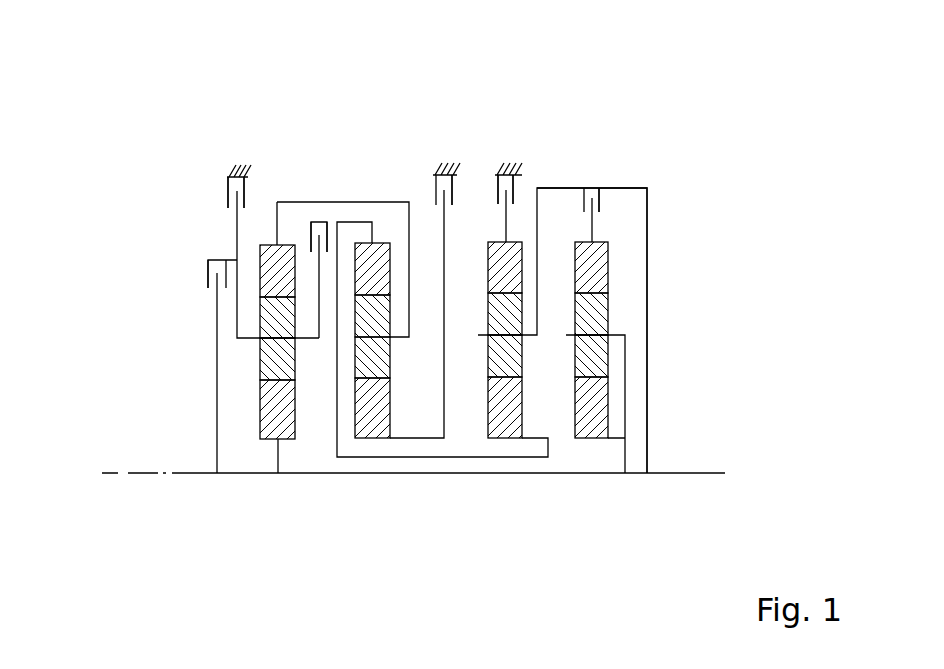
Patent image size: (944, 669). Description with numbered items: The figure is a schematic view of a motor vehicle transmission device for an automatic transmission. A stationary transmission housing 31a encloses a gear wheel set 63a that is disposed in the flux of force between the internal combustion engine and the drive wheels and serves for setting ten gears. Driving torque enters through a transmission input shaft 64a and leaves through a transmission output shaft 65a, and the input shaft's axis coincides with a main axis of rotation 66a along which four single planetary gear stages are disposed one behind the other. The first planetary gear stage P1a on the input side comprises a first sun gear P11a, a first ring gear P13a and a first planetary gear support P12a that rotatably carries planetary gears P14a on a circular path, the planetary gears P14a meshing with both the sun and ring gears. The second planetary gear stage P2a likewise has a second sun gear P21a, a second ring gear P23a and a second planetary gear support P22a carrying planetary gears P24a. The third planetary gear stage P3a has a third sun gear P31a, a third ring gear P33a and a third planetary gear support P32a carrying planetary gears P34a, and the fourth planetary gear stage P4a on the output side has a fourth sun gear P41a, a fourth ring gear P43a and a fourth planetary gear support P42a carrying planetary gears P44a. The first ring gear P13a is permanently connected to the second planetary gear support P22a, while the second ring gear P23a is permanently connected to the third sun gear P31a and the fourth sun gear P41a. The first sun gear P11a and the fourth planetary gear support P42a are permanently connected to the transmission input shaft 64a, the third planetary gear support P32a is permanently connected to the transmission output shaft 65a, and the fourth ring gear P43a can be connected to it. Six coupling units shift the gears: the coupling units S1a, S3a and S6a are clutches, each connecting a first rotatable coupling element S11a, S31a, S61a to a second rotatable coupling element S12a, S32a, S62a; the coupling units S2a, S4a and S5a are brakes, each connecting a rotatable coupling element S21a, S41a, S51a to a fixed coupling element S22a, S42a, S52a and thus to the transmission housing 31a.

The transmission housing 31a is at (230, 170).
The gear wheel set 63a is at (697, 160).
The transmission input shaft 64a is at (228, 478).
The transmission output shaft 65a is at (688, 478).
The main axis of rotation 66a is at (131, 478).
The first coupling unit S1a is at (217, 255).
The first rotatable coupling element of the first coupling unit S11a is at (215, 308).
The second rotatable coupling element of the first coupling unit S12a is at (209, 259).
The second coupling unit S2a is at (230, 165).
The rotatable coupling element of the second coupling unit S21a is at (230, 223).
The fixed coupling element of the second coupling unit S22a is at (230, 196).
The third coupling unit S3a is at (318, 218).
The first rotatable coupling element of the third coupling unit S31a is at (294, 248).
The second rotatable coupling element of the third coupling unit S32a is at (328, 245).
The fourth coupling unit S4a is at (452, 154).
The rotatable coupling element of the fourth coupling unit S41a is at (441, 228).
The fixed coupling element of the fourth coupling unit S42a is at (455, 193).
The fifth coupling unit S5a is at (515, 157).
The rotatable coupling element of the fifth coupling unit S51a is at (490, 210).
The fixed coupling element of the fifth coupling unit S52a is at (514, 194).
The sixth coupling unit S6a is at (609, 178).
The first rotatable coupling element of the sixth coupling unit S61a is at (593, 232).
The second rotatable coupling element of the sixth coupling unit S62a is at (600, 208).
The first planetary gear stage P1a is at (238, 158).
The first sun gear P11a is at (273, 408).
The first planetary gear support P12a is at (309, 338).
The first ring gear P13a is at (268, 236).
The planetary gears of the first planetary gear stage P14a is at (275, 360).
The second planetary gear stage P2a is at (387, 228).
The second sun gear P21a is at (372, 430).
The second planetary gear support P22a is at (395, 338).
The second ring gear P23a is at (374, 268).
The planetary gears of the second planetary gear stage P24a is at (367, 357).
The third planetary gear stage P3a is at (517, 214).
The third sun gear P31a is at (508, 425).
The third planetary gear support P32a is at (528, 343).
The third ring gear P33a is at (510, 243).
The planetary gears of the third planetary gear stage P34a is at (495, 353).
The fourth planetary gear stage P4a is at (622, 206).
The fourth sun gear P41a is at (598, 393).
The fourth planetary gear support P42a is at (617, 333).
The fourth ring gear P43a is at (592, 272).
The planetary gears of the fourth planetary gear stage P44a is at (590, 317).